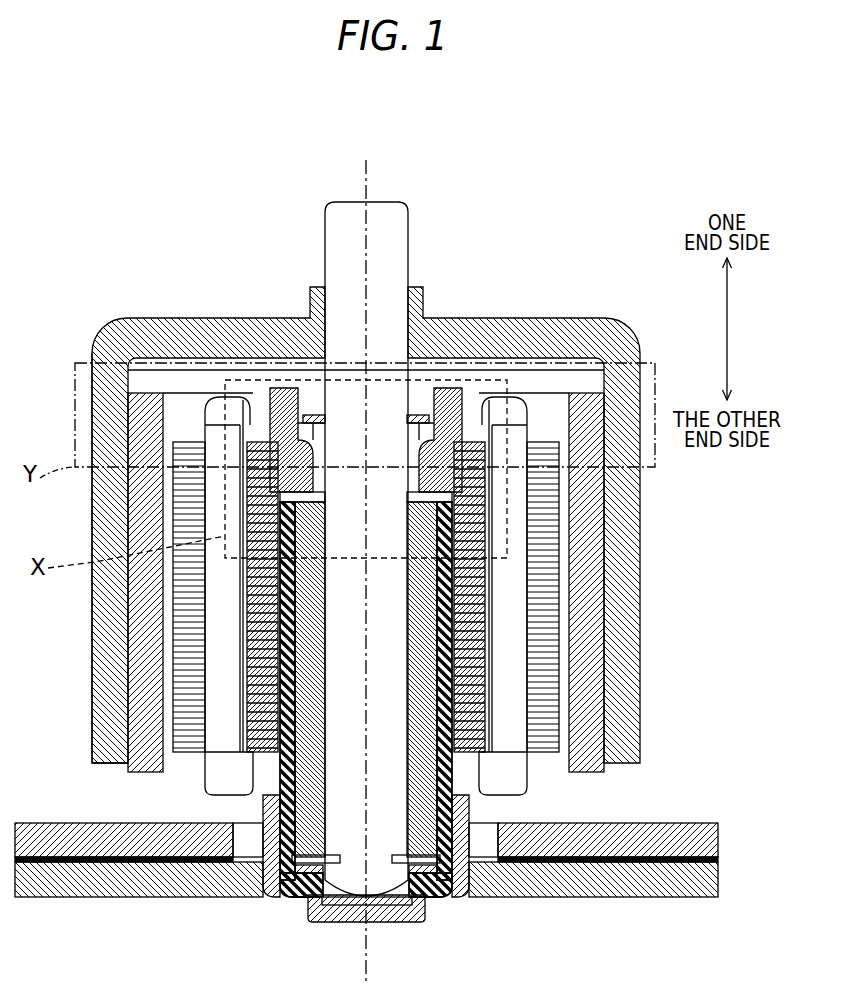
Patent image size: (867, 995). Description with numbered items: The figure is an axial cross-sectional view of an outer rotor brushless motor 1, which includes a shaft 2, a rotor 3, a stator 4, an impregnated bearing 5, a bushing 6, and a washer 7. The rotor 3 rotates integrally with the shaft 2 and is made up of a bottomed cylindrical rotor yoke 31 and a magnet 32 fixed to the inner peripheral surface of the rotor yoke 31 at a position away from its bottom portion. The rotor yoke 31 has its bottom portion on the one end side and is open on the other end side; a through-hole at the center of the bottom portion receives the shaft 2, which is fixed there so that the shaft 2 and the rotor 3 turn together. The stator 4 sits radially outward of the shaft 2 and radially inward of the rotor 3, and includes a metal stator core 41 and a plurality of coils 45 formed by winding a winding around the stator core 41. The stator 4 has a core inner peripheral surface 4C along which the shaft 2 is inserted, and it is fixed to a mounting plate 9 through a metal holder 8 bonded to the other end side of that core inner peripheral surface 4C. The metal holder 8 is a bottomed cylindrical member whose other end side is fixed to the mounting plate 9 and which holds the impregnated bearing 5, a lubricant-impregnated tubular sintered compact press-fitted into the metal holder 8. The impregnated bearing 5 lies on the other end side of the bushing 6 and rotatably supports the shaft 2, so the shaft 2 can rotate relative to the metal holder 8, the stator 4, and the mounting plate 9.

The motor 1 is at (86, 202).
The shaft 2 is at (403, 193).
The rotor 3 is at (93, 318).
The rotor yoke 31 is at (95, 440).
The magnet 32 is at (128, 772).
The stator 4 is at (548, 388).
The stator core 41 is at (585, 508).
The core inner peripheral surface 4C is at (557, 561).
The coils 45 is at (213, 395).
The impregnated bearing 5 is at (472, 813).
The bushing 6 is at (277, 388).
The washer 7 is at (424, 410).
The metal holder 8 is at (430, 918).
The mounting plate 9 is at (560, 897).